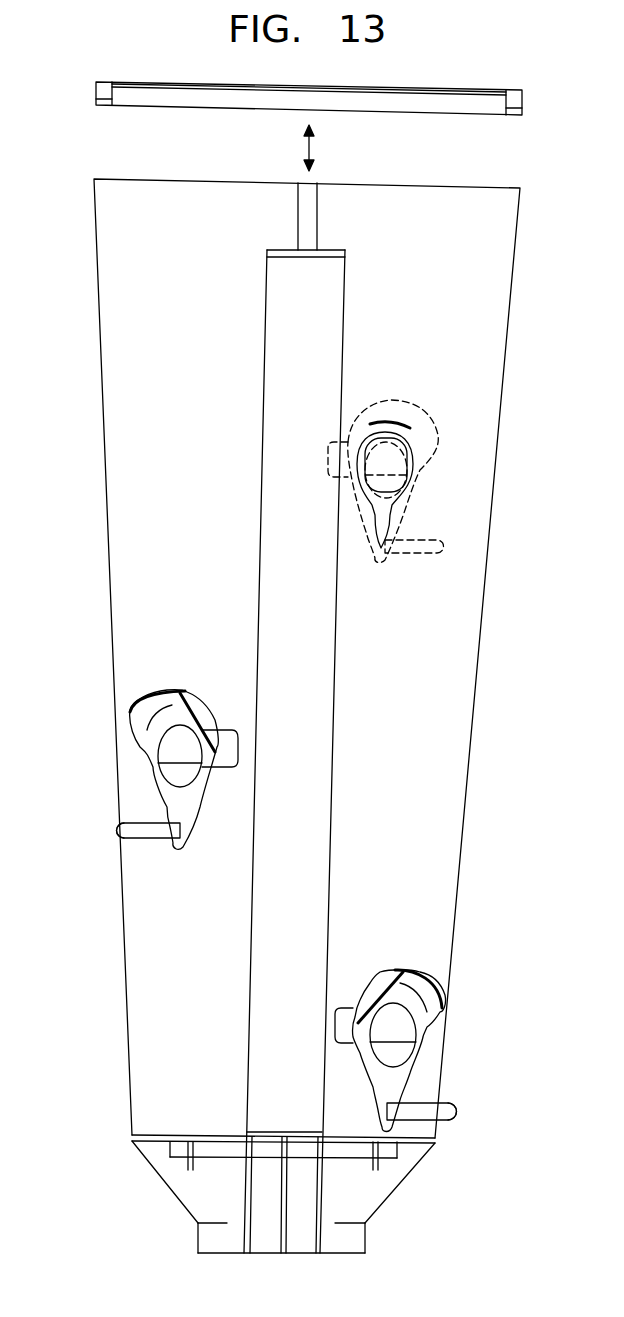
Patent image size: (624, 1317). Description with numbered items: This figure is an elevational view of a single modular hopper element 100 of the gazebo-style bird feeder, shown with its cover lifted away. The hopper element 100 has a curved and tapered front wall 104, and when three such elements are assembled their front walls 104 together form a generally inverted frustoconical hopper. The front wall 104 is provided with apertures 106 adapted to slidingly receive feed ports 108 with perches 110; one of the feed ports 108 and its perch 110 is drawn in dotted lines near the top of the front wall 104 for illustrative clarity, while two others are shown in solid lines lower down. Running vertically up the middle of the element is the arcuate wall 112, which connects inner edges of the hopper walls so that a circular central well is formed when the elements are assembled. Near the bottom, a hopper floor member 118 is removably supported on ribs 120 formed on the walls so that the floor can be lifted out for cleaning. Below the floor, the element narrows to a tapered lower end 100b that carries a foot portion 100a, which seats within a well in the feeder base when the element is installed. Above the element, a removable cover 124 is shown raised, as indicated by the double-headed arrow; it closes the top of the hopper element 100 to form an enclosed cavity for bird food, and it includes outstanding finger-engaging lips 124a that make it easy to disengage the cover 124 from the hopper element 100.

The hopper element 100 is at (494, 684).
The foot portion 100a is at (355, 1247).
The tapered lower end 100b is at (383, 1196).
The front wall 104 is at (490, 300).
The aperture 106 is at (400, 522).
The feed port 108 is at (183, 692).
The perch 110 is at (135, 830).
The arcuate wall 112 is at (318, 333).
The hopper floor member 118 is at (152, 1135).
The rib 120 is at (188, 1162).
The removable cover 124 is at (368, 88).
The finger-engaging lip 124a is at (440, 92).